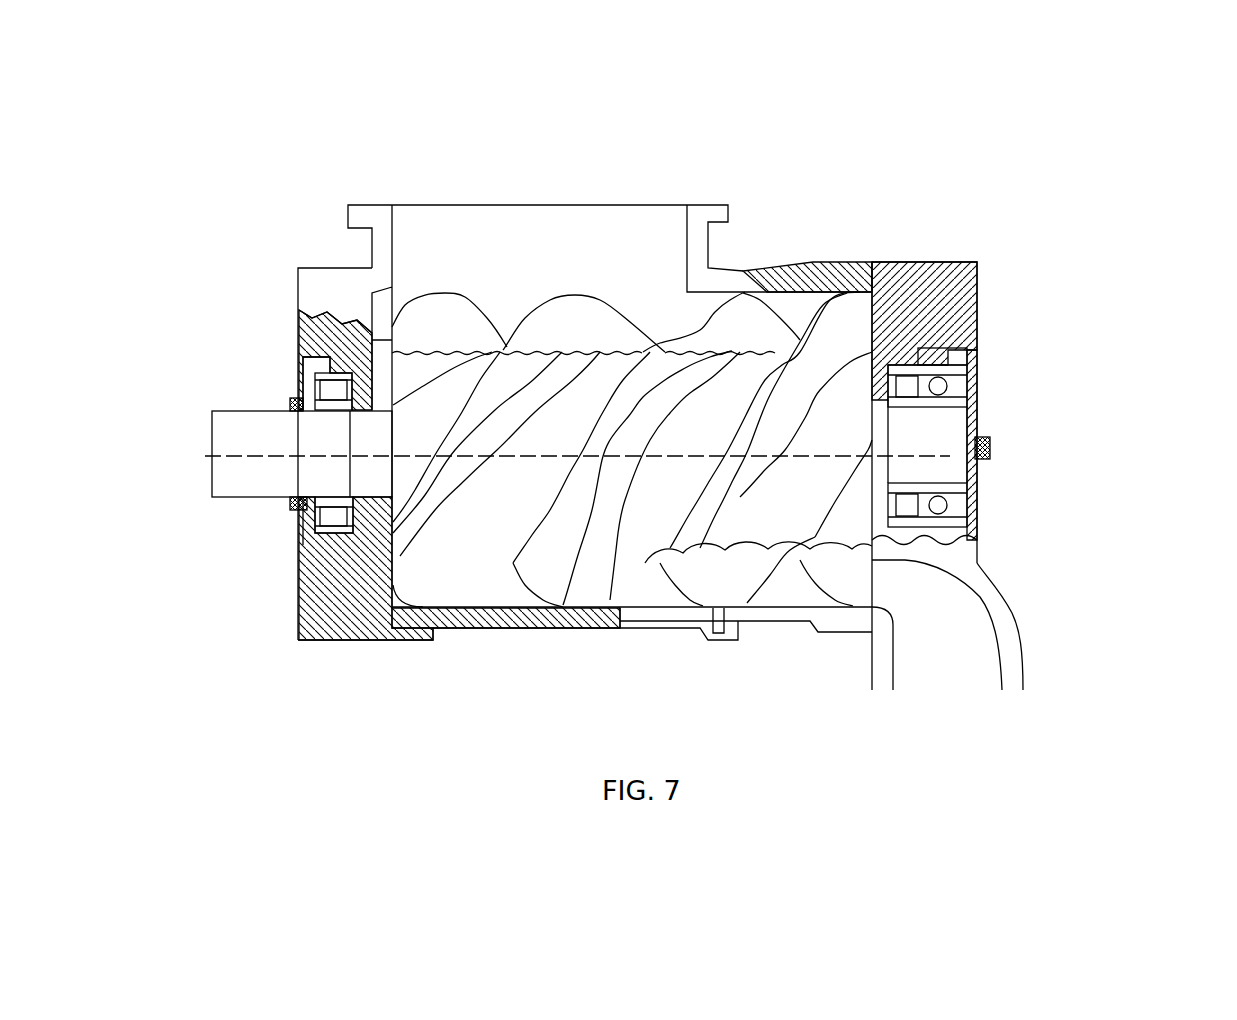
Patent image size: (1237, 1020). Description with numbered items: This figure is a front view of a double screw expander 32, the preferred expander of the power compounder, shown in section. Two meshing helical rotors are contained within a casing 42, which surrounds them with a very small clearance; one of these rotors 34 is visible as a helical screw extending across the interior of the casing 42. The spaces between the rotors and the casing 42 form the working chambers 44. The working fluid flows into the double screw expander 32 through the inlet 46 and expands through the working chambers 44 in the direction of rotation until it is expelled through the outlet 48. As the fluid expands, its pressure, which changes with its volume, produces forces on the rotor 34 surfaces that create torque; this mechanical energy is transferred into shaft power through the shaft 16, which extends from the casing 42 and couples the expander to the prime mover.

The shaft 16 is at (240, 435).
The double screw expander 32 is at (1127, 230).
The rotor 34 is at (735, 343).
The casing 42 is at (485, 633).
The working chambers 44 is at (540, 632).
The inlet 46 is at (967, 660).
The outlet 48 is at (490, 235).